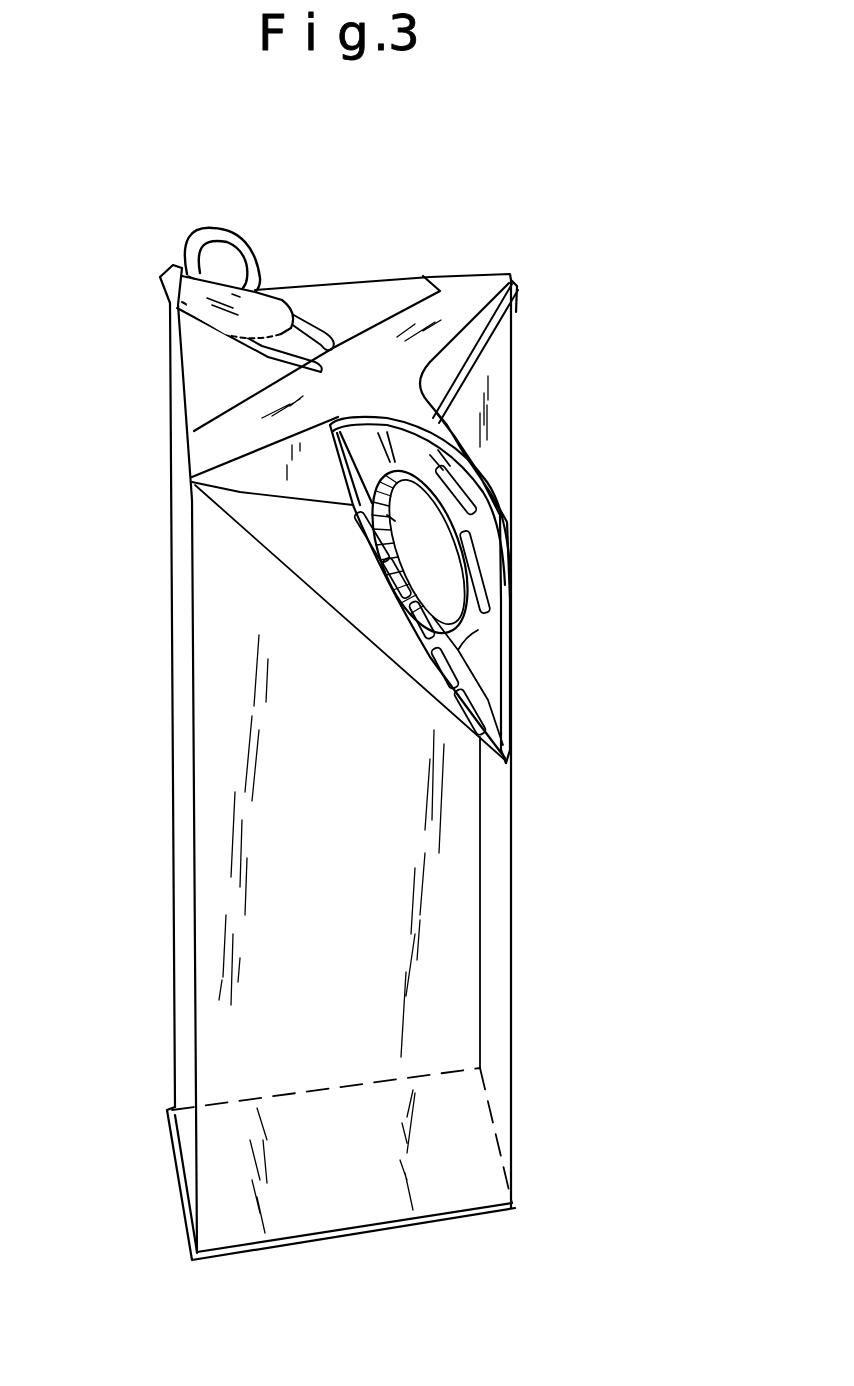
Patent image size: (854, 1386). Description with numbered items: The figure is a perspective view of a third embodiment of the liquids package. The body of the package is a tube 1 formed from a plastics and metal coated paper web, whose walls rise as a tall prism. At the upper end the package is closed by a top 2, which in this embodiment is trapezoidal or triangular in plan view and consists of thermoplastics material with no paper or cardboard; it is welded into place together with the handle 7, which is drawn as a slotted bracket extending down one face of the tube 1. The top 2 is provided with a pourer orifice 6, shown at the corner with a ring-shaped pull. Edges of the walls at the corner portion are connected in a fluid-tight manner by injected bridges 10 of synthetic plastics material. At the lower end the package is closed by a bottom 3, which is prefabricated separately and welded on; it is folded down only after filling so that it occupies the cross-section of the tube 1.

The tube 1 is at (172, 692).
The top 2 is at (389, 295).
The bottom 3 is at (175, 1176).
The pourer orifice 6 is at (198, 212).
The handle 7 is at (463, 463).
The injected bridges 10 is at (198, 443).